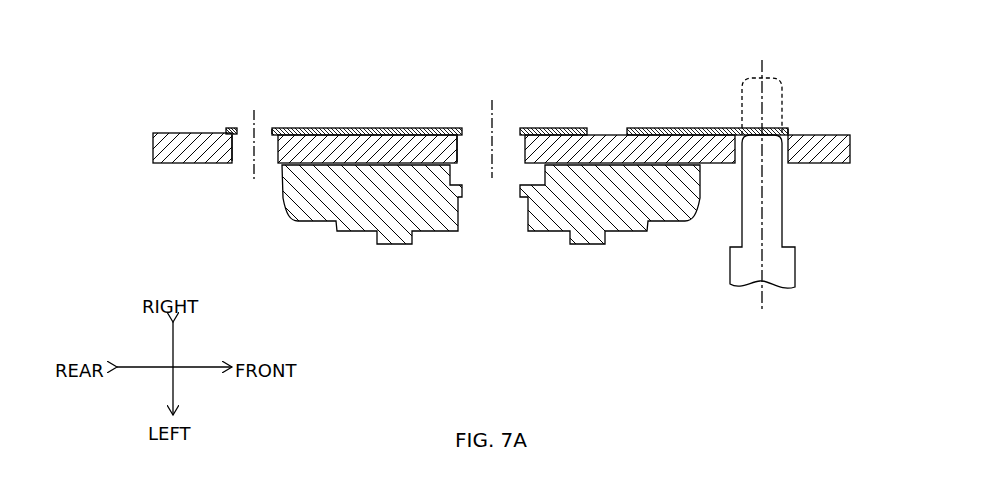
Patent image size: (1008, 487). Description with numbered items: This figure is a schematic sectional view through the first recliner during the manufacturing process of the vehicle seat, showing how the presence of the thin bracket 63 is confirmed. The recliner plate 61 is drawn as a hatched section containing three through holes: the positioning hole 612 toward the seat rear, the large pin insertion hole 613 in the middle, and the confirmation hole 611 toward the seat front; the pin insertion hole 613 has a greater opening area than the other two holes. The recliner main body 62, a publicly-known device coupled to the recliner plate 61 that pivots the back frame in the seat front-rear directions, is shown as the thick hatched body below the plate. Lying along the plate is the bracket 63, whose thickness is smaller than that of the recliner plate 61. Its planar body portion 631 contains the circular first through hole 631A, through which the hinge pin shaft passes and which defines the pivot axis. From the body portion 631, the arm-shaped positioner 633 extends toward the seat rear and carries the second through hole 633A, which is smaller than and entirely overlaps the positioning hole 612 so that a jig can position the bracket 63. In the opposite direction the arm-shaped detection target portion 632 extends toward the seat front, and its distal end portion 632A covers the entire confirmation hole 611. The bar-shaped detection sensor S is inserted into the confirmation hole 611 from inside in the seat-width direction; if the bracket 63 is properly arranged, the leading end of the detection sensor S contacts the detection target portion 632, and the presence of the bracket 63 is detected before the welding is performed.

The recliner plate 61 is at (150, 146).
The confirmation hole 611 is at (785, 150).
The positioning hole 612 is at (236, 148).
The pin insertion hole 613 is at (460, 146).
The recliner main body 62 is at (292, 219).
The bracket 63 is at (228, 127).
The body portion 631 is at (438, 126).
The first through hole 631A is at (518, 130).
The detection target portion 632 is at (700, 126).
The distal end portion 632A is at (770, 126).
The positioner 633 is at (323, 126).
The second through hole 633A is at (270, 130).
The detection sensor S is at (780, 265).